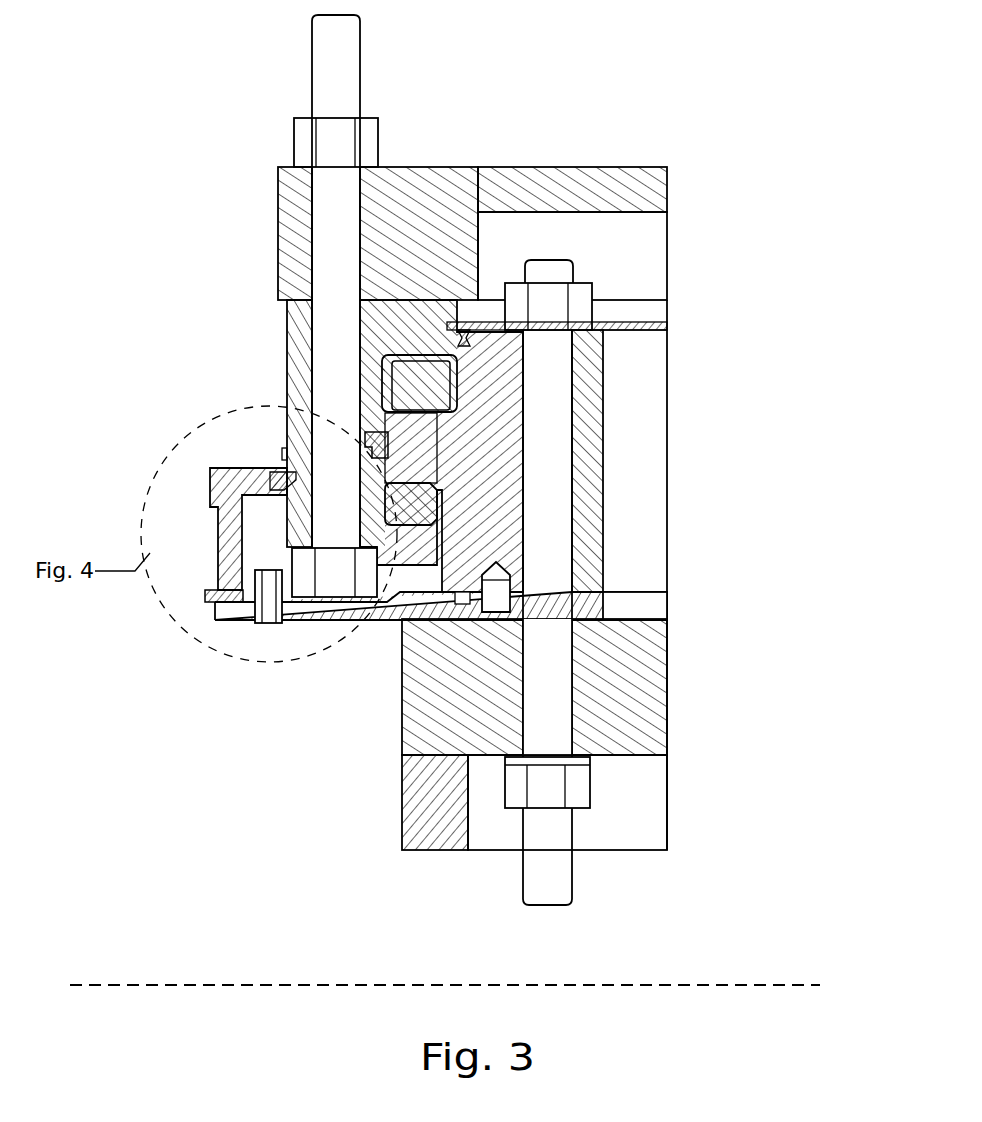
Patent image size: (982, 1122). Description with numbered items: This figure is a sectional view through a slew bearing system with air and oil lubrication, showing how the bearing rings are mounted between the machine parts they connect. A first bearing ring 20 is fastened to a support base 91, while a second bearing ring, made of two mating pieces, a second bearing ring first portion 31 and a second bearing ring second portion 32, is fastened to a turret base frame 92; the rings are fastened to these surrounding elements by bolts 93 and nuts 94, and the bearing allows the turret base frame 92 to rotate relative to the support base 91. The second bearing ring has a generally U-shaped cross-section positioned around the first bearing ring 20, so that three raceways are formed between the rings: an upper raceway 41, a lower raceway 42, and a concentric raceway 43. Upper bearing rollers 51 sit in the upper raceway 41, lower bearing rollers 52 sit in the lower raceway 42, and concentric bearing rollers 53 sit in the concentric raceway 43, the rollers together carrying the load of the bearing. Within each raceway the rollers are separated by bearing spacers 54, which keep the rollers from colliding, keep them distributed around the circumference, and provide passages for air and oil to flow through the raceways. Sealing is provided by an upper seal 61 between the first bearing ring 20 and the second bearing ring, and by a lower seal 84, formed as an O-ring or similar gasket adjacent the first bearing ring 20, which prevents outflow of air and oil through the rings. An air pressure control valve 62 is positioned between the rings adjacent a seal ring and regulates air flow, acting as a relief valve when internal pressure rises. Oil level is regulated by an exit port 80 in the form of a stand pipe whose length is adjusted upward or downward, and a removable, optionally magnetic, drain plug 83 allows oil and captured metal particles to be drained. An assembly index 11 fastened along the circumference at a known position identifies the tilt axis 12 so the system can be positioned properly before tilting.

The bolt 93 is at (345, 58).
The nut 94 is at (345, 146).
The upper seal 61 is at (455, 330).
The turret base frame 92 is at (287, 238).
The second bearing ring first portion 31 is at (300, 340).
The bearing spacer 54 is at (455, 368).
The concentric bearing roller 53 is at (362, 448).
The air pressure control valve 62 is at (273, 467).
The first bearing ring 20 is at (592, 400).
The upper bearing roller 51 is at (427, 388).
The concentric raceway 43 is at (300, 532).
The upper raceway 41 is at (432, 420).
The assembly index 11 is at (503, 588).
The second bearing ring second portion 32 is at (290, 535).
The drain plug 83 is at (205, 597).
The support base 91 is at (632, 670).
The exit port 80 is at (268, 610).
The lower raceway 42 is at (385, 520).
The lower bearing roller 52 is at (413, 523).
The lower seal 84 is at (457, 605).
The tilt axis 12 is at (195, 985).